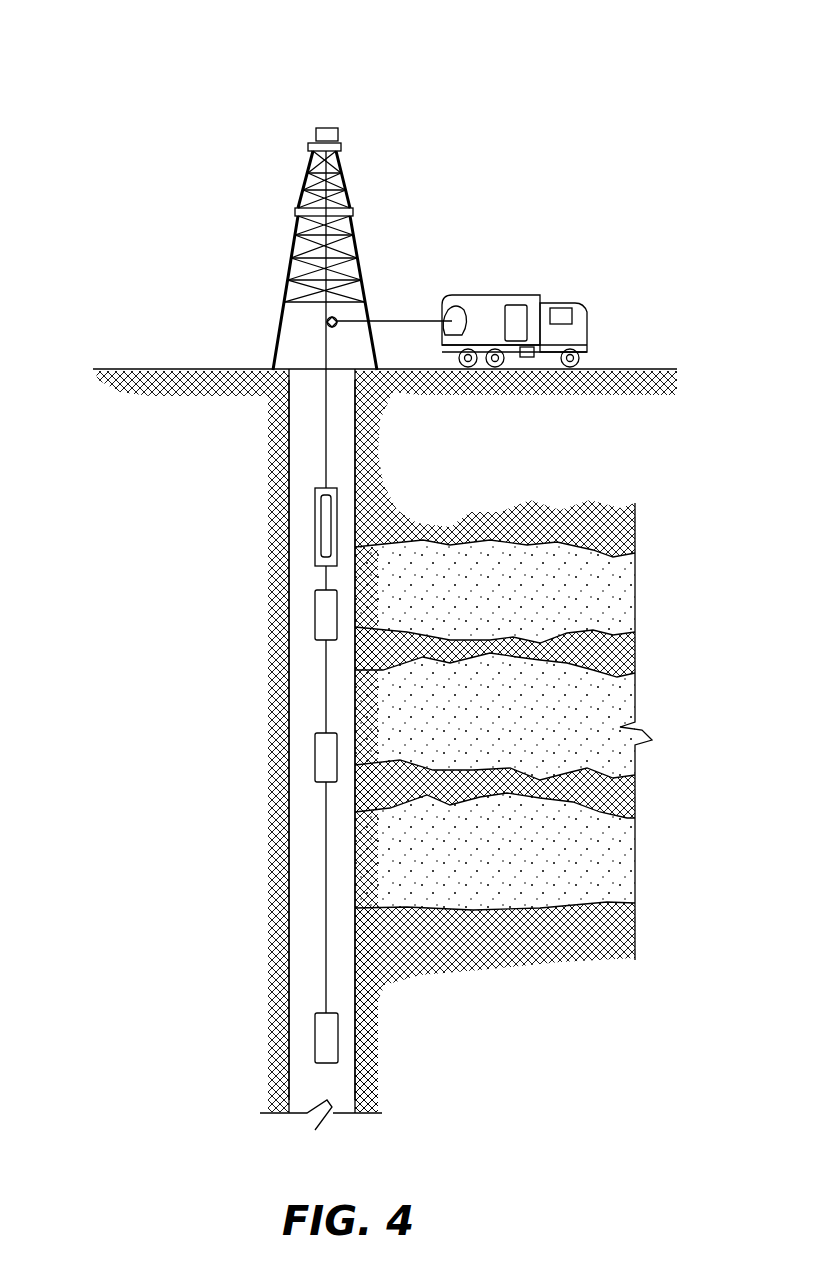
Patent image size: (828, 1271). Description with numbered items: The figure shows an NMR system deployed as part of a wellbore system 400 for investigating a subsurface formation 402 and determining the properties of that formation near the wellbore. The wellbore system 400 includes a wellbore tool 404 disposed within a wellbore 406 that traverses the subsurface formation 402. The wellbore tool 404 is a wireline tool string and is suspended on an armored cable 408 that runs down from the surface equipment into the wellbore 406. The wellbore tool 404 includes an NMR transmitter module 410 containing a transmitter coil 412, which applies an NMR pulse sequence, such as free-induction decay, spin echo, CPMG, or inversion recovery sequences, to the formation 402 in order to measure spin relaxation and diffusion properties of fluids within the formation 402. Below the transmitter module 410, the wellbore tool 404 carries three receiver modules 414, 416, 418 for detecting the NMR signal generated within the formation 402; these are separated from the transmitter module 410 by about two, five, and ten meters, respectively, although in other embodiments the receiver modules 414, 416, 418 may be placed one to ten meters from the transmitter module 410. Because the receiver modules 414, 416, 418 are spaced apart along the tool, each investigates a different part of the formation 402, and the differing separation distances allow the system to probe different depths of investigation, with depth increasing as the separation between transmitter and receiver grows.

The wellbore system 400 is at (416, 66).
The subsurface formation 402 is at (533, 597).
The wellbore tool 404 is at (315, 525).
The wellbore 406 is at (300, 678).
The armored cable 408 is at (323, 343).
The NMR transmitter module 410 is at (355, 510).
The transmitter coil 412 is at (355, 510).
The receiver module 414 is at (313, 615).
The receiver module 416 is at (313, 757).
The receiver module 418 is at (315, 1040).